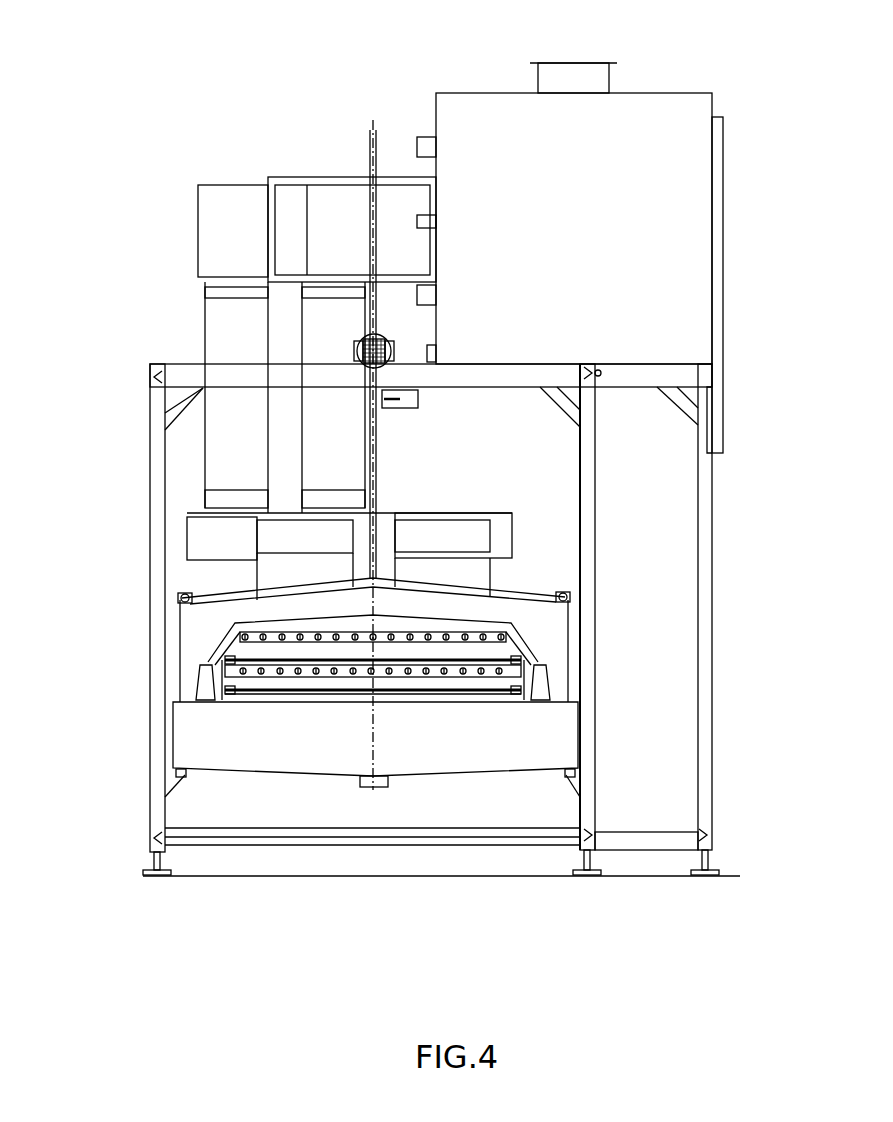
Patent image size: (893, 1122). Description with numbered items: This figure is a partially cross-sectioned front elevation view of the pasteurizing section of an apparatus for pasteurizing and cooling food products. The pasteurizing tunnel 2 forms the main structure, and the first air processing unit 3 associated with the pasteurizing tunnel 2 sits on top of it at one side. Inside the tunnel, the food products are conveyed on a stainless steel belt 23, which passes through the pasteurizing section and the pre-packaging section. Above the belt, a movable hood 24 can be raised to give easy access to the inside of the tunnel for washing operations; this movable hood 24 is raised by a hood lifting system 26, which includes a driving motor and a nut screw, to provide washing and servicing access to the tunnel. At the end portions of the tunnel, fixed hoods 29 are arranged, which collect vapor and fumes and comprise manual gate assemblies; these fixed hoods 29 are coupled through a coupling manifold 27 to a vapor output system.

The pasteurizing tunnel 2 is at (140, 684).
The first air processing unit 3 is at (667, 132).
The stainless steel belt 23 is at (532, 640).
The movable hood 24 is at (517, 593).
The hood lifting system 26 is at (353, 342).
The coupling manifold 27 is at (215, 349).
The fixed hood 29 is at (268, 540).